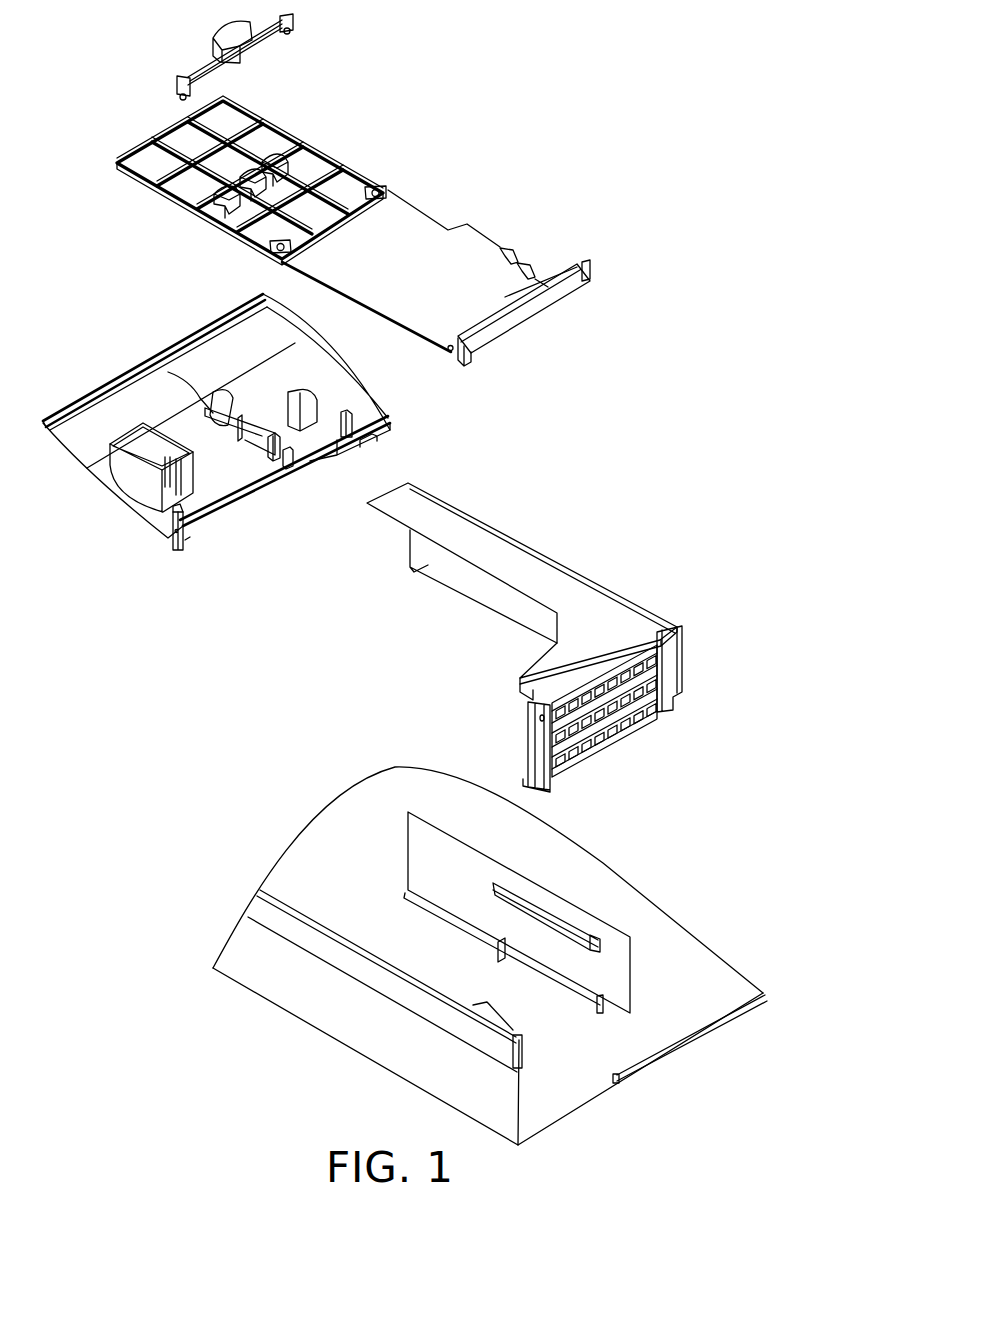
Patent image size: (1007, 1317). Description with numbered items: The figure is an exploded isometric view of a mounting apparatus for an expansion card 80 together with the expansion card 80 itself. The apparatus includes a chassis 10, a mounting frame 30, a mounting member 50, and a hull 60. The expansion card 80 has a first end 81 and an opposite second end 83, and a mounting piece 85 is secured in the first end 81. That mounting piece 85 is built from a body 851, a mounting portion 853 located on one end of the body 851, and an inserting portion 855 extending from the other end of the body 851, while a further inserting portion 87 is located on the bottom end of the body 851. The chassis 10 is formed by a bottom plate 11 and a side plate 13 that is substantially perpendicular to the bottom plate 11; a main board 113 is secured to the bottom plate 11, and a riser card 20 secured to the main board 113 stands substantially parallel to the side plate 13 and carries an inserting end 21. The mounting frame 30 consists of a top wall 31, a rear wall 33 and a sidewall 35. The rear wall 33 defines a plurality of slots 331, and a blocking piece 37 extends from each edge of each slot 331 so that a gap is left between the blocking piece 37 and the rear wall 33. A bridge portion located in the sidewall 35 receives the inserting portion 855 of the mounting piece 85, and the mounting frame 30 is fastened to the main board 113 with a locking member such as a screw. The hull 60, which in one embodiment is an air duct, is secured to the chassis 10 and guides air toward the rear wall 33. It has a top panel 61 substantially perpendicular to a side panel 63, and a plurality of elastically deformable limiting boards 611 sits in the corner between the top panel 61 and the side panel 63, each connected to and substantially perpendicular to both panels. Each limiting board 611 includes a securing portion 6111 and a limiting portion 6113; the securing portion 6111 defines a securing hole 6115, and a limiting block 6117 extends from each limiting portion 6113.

The chassis 10 is at (491, 956).
The bottom plate 11 is at (563, 1093).
The main board 113 is at (688, 968).
The side plate 13 is at (288, 982).
The riser card 20 is at (584, 955).
The inserting end 21 is at (567, 940).
The mounting frame 30 is at (551, 640).
The top wall 31 is at (498, 562).
The rear wall 33 is at (614, 721).
The slots 331 is at (600, 697).
The sidewall 35 is at (484, 590).
The blocking piece 37 is at (655, 678).
The mounting member 50 is at (188, 47).
The hull 60 is at (201, 453).
The top panel 61 is at (122, 498).
The limiting boards 611 is at (190, 524).
The securing portion 6111 is at (176, 522).
The limiting portion 6113 is at (177, 544).
The securing hole 6115 is at (185, 543).
The limiting block 6117 is at (276, 475).
The side panel 63 is at (240, 507).
The expansion card 80 is at (397, 247).
The first end 81 is at (507, 297).
The second end 83 is at (232, 120).
The mounting piece 85 is at (567, 336).
The body 851 is at (530, 305).
The mounting portion 853 is at (470, 355).
The inserting portion 855 is at (625, 291).
The inserting portion 87 is at (533, 280).